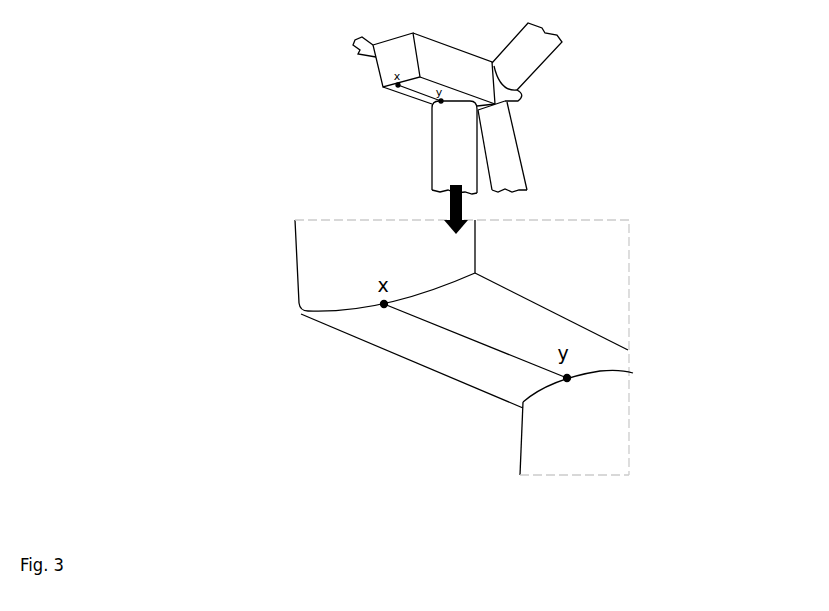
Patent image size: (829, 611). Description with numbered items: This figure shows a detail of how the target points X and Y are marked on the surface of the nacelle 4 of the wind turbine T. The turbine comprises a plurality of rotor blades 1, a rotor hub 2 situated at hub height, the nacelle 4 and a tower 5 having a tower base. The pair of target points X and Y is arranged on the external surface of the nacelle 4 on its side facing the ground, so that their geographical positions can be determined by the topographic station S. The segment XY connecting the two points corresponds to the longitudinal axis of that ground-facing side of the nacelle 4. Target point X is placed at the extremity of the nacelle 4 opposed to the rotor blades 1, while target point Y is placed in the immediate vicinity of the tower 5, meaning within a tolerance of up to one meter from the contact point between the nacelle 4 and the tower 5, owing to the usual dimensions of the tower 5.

The rotor blades 1 is at (545, 25).
The rotor hub 2 is at (524, 94).
The nacelle 4 is at (371, 69).
The tower 5 is at (442, 155).